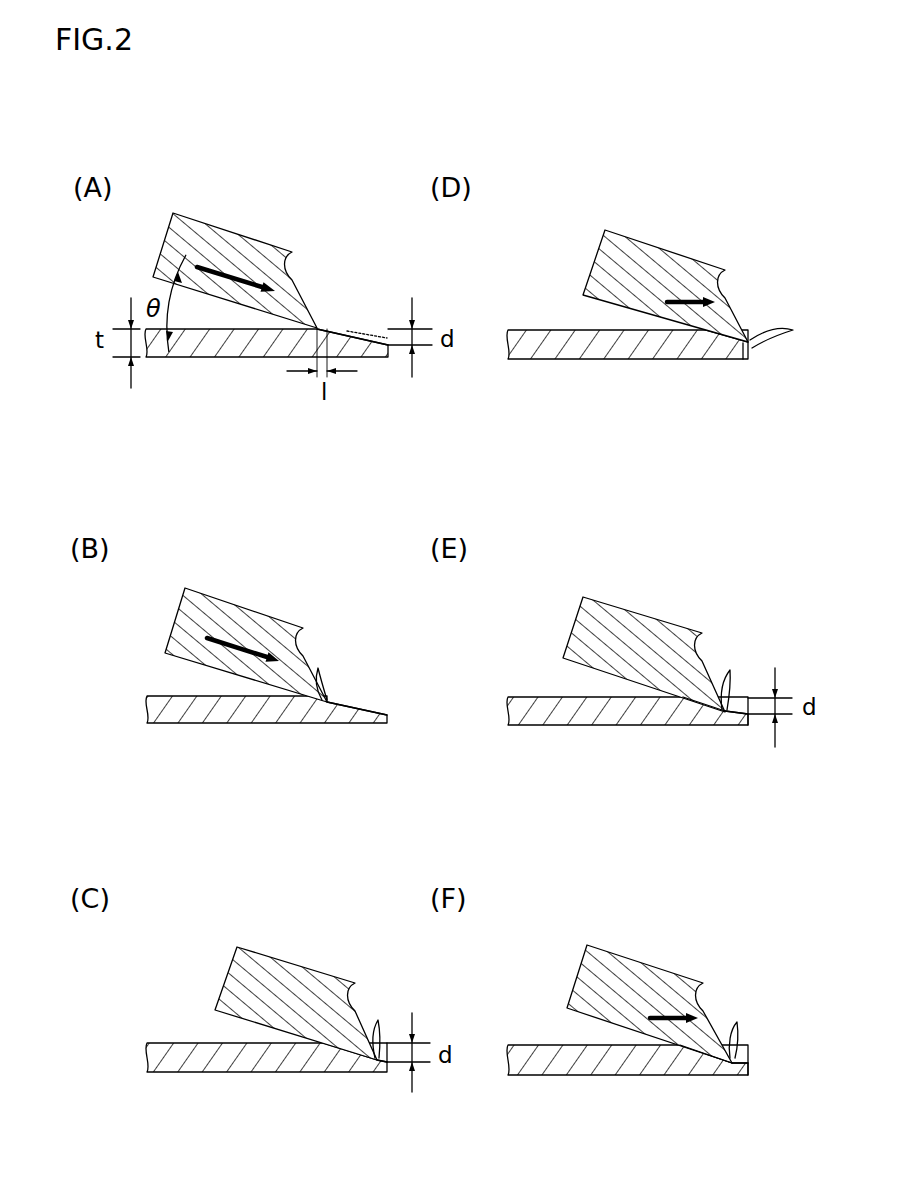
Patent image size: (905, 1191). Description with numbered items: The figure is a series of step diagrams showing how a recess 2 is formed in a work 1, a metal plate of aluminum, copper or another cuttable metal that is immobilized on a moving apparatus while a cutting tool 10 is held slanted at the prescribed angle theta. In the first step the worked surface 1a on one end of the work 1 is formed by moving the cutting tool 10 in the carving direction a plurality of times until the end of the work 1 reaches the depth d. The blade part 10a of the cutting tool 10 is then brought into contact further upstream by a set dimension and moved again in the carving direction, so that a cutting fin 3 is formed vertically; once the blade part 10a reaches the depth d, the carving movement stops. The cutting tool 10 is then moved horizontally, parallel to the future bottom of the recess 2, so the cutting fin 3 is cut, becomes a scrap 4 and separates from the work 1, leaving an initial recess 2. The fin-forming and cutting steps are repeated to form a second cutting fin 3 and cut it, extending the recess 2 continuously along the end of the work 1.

The work 1 is at (207, 357).
The worked surface 1a is at (357, 329).
The recess 2 is at (742, 360).
The cutting fin 3 is at (323, 677).
The scrap 4 is at (770, 327).
The cutting tool 10 is at (217, 240).
The blade part 10a is at (318, 328).